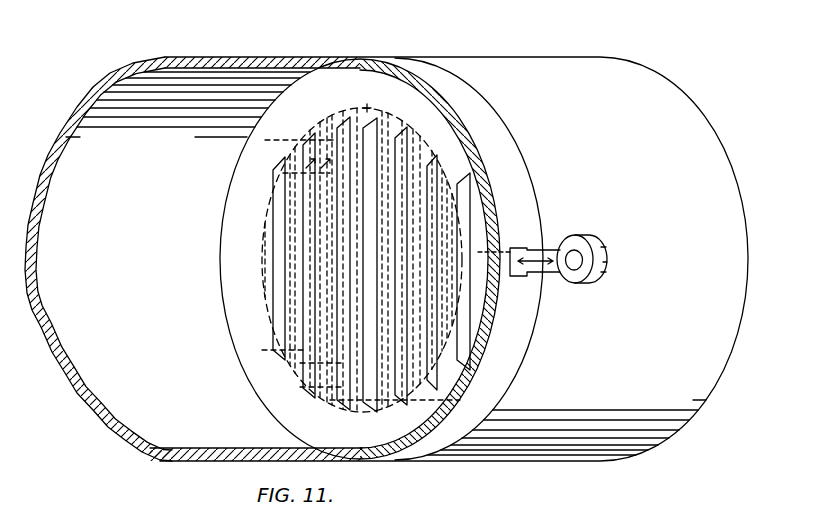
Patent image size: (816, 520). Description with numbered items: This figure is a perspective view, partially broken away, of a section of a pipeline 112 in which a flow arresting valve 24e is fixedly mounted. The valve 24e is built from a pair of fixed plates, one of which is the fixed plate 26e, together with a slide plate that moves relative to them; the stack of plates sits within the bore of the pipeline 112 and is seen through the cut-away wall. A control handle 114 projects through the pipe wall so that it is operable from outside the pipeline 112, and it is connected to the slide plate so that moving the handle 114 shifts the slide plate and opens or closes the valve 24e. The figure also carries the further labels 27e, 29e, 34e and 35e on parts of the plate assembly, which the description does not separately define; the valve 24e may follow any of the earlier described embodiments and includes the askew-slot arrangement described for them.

The pipeline 112 is at (286, 57).
The control handle 114 is at (591, 236).
The flow arresting valve 24e is at (269, 425).
The fixed plate 26e is at (221, 282).
The plate assembly 27e is at (306, 306).
The plate support 29e is at (303, 150).
The plate stack envelope 34e is at (366, 106).
The lower plate support 35e is at (274, 346).